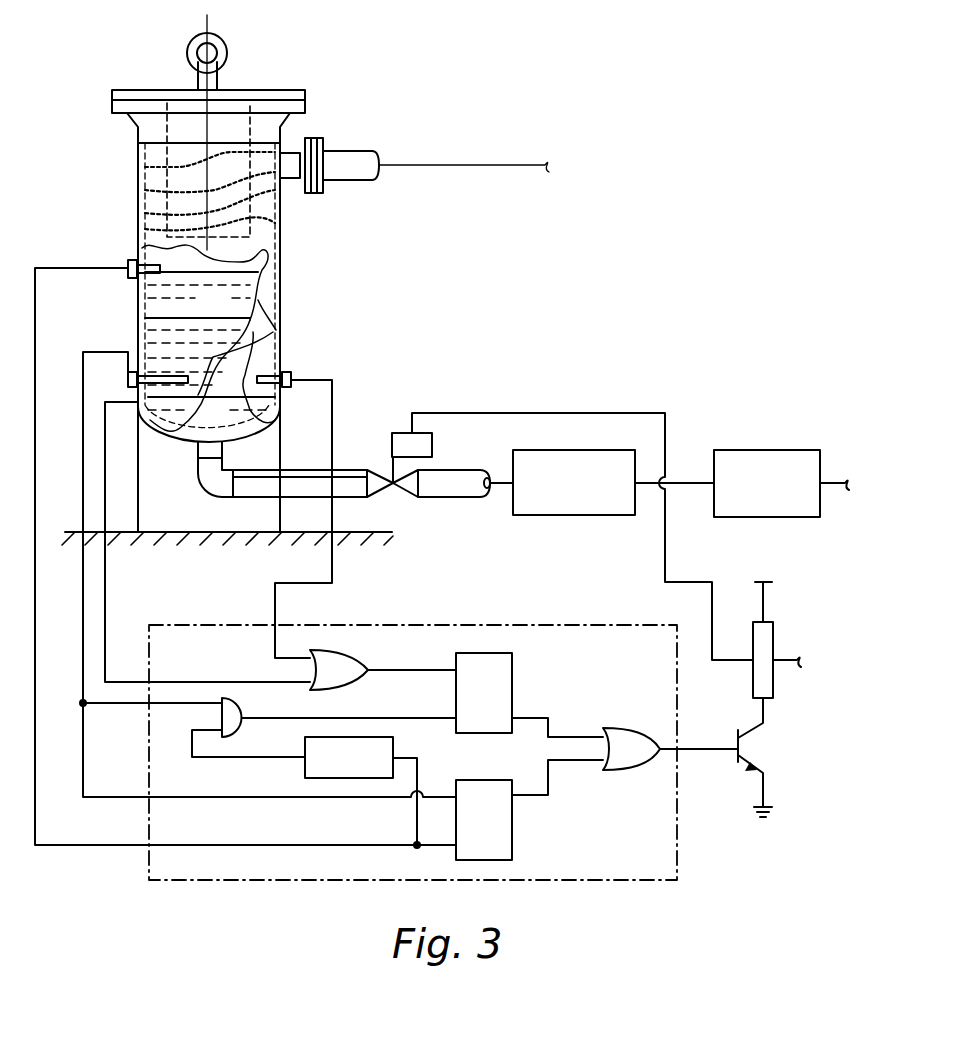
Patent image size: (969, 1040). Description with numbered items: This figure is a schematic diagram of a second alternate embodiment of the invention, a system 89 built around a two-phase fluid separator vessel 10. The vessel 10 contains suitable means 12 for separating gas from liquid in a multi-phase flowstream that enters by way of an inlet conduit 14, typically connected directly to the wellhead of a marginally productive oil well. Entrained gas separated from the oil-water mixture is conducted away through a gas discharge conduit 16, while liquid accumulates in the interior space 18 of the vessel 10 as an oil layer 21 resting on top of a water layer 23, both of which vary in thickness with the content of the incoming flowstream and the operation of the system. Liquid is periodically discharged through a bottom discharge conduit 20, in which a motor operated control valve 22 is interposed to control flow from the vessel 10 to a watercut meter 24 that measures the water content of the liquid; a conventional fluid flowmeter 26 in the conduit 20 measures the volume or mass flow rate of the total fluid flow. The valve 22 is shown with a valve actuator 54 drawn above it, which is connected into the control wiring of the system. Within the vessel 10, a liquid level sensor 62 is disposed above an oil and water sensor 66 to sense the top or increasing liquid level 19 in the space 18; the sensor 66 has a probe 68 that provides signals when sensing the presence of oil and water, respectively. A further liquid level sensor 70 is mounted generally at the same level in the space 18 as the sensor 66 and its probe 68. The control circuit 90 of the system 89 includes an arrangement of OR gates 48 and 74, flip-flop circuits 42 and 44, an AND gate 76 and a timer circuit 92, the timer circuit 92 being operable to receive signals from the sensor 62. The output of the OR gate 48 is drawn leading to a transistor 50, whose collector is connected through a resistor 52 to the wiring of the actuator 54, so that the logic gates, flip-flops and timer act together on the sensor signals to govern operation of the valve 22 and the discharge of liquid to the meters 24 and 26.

The separator vessel 10 is at (305, 280).
The means for separating gas from liquid 12 is at (142, 152).
The inlet conduit 14 is at (446, 166).
The gas discharge conduit 16 is at (226, 46).
The interior space 18 is at (224, 309).
The liquid level 19 is at (281, 250).
The bottom discharge conduit 20 is at (292, 470).
The oil layer 21 is at (256, 300).
The motor operated control valve 22 is at (412, 497).
The water layer 23 is at (265, 335).
The watercut meter 24 is at (560, 450).
The fluid flowmeter 26 is at (752, 450).
The flip-flop circuit 42 is at (512, 668).
The flip-flop circuit 44 is at (512, 828).
The OR gate 48 is at (612, 728).
The transistor 50 is at (735, 762).
The resistor 52 is at (753, 680).
The valve actuator 54 is at (405, 433).
The liquid level sensor 62 is at (128, 260).
The oil and water sensor 66 is at (125, 372).
The probe 68 is at (128, 398).
The liquid level sensor 70 is at (292, 372).
The OR gate 74 is at (345, 650).
The AND gate 76 is at (238, 737).
The system 89 is at (418, 588).
The control circuit 90 is at (410, 769).
The timer circuit 92 is at (348, 778).